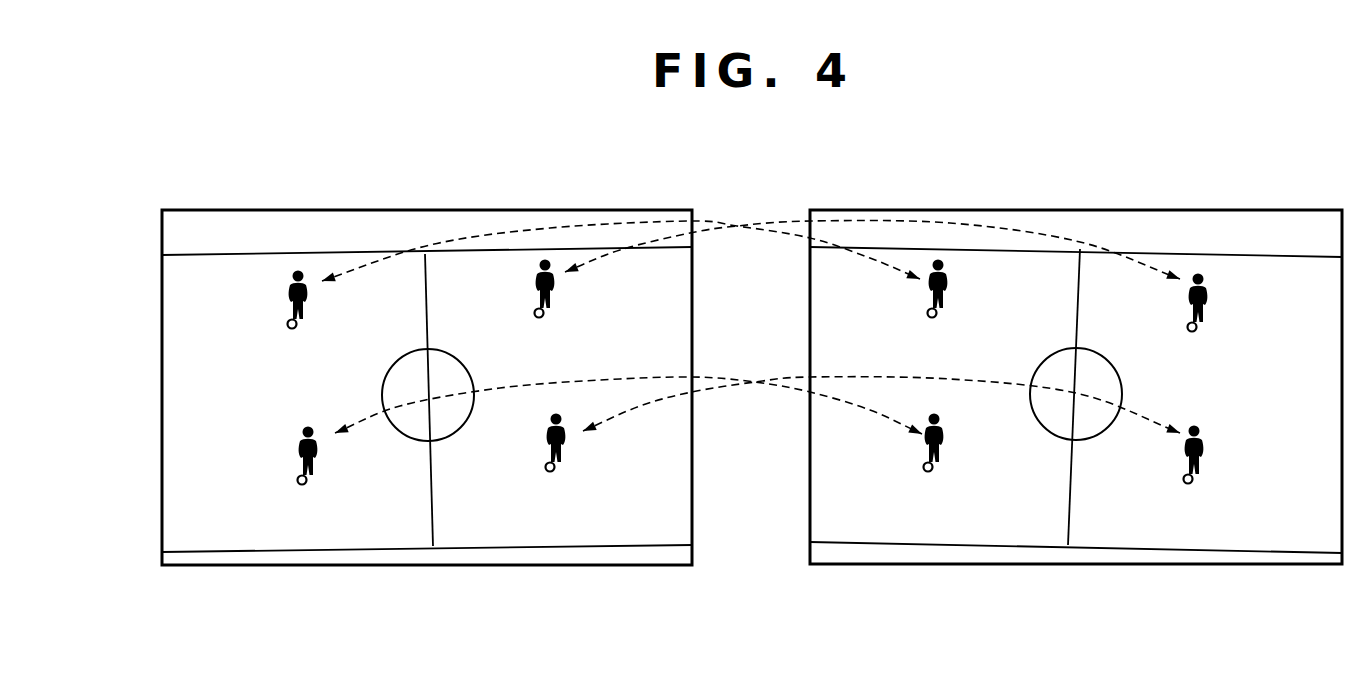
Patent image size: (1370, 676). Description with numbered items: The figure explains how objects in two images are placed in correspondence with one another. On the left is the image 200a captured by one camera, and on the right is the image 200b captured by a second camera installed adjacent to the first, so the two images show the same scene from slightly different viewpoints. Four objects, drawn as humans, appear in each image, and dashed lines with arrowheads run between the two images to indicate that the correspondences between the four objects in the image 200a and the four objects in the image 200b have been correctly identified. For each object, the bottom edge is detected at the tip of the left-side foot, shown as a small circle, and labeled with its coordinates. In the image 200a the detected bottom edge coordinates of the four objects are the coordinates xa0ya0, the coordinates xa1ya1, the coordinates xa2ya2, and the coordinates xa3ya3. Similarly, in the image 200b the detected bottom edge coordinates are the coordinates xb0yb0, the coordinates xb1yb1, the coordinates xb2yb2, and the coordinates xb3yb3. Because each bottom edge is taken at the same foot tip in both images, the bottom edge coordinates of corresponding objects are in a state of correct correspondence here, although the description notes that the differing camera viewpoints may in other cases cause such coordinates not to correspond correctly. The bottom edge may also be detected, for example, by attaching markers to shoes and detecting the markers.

The image 200a is at (583, 209).
The image 200b is at (1250, 209).
The bottom edge coordinates (xa0, ya0) xa0ya0 is at (289, 328).
The bottom edge coordinates (xa1, ya1) xa1ya1 is at (536, 317).
The bottom edge coordinates (xa2, ya2) xa2ya2 is at (299, 484).
The bottom edge coordinates (xa3, ya3) xa3ya3 is at (547, 471).
The bottom edge coordinates (xb0, yb0) xb0yb0 is at (929, 317).
The bottom edge coordinates (xb1, yb1) xb1yb1 is at (1189, 331).
The bottom edge coordinates (xb2, yb2) xb2yb2 is at (925, 471).
The bottom edge coordinates (xb3, yb3) xb3yb3 is at (1185, 483).